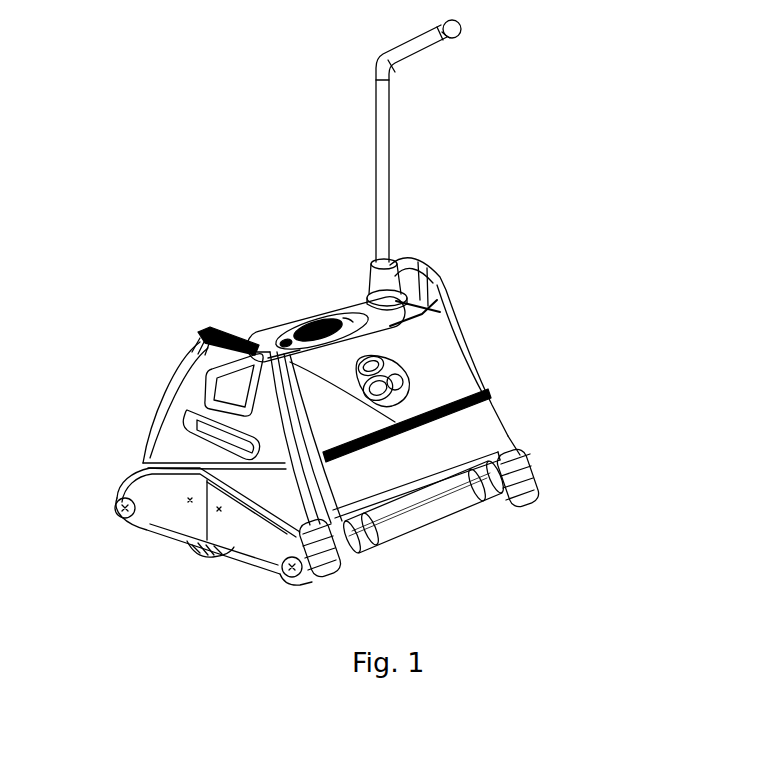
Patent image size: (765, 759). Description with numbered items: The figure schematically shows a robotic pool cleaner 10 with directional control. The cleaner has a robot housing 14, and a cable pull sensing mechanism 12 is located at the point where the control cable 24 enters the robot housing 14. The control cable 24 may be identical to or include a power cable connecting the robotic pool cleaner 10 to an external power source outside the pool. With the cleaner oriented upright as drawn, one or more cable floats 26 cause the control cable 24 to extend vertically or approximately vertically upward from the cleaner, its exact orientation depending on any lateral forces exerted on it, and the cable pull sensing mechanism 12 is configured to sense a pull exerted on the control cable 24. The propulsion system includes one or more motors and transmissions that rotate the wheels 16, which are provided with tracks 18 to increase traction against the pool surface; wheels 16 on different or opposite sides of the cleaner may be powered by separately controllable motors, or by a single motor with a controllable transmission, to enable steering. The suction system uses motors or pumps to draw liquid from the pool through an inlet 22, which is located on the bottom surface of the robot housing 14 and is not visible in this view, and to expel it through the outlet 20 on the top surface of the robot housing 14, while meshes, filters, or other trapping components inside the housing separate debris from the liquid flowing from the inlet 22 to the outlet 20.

The robotic pool cleaner 10 is at (143, 266).
The cable pull sensing mechanism 12 is at (362, 287).
The robot housing 14 is at (477, 433).
The wheels 16 is at (530, 495).
The tracks 18 is at (205, 550).
The outlet 20 is at (298, 325).
The inlet 22 is at (400, 547).
The control cable 24 is at (374, 175).
The cable floats 26 is at (456, 38).